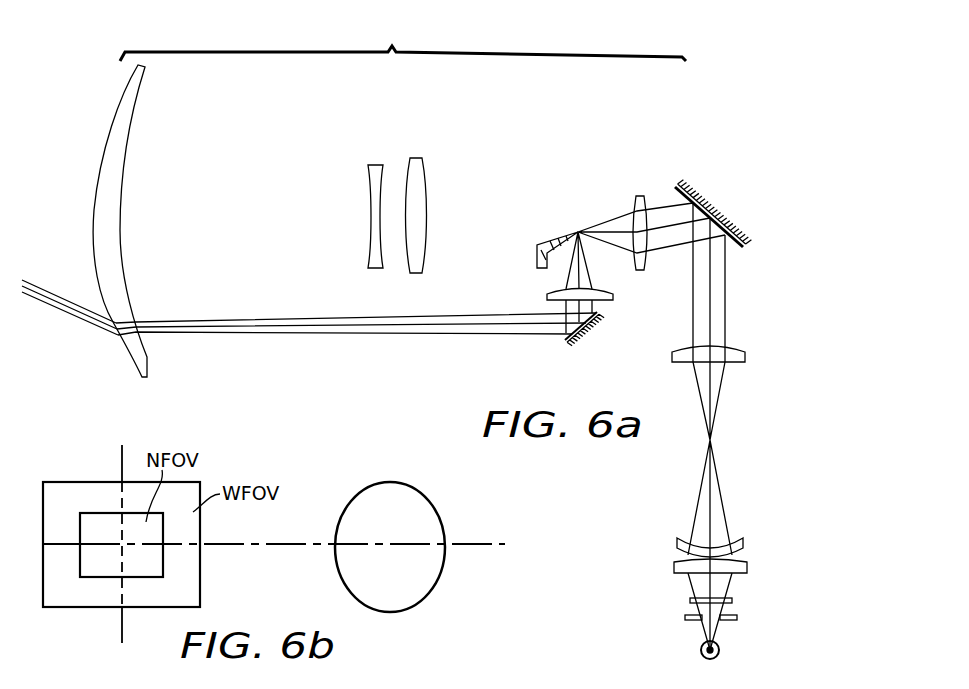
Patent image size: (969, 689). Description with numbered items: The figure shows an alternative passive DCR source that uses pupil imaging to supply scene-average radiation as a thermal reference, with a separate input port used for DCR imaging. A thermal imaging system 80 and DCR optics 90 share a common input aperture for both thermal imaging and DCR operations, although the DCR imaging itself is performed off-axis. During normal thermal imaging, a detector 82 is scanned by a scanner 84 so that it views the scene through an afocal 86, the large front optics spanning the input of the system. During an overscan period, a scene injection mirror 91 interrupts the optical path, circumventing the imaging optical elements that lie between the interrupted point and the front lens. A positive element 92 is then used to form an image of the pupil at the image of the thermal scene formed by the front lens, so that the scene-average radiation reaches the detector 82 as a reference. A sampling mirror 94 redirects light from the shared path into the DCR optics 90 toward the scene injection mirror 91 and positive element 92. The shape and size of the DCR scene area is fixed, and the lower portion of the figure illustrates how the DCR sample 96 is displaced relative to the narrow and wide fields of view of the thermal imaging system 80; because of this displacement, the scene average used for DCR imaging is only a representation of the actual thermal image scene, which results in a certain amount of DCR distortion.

In FIG. 6a, the thermal imaging system 80 is at (259, 222).
In FIG. 6a, the detector 82 is at (699, 652).
In FIG. 6a, the scanner 84 is at (709, 197).
In FIG. 6a, the afocal 86 is at (403, 42).
In FIG. 6a, the DCR optics 90 is at (511, 262).
In FIG. 6a, the scene injection mirror 91 is at (541, 245).
In FIG. 6a, the positive element 92 is at (613, 300).
In FIG. 6a, the sampling mirror 94 is at (587, 337).
In FIG. 6b, the DCR sample 96 is at (430, 503).